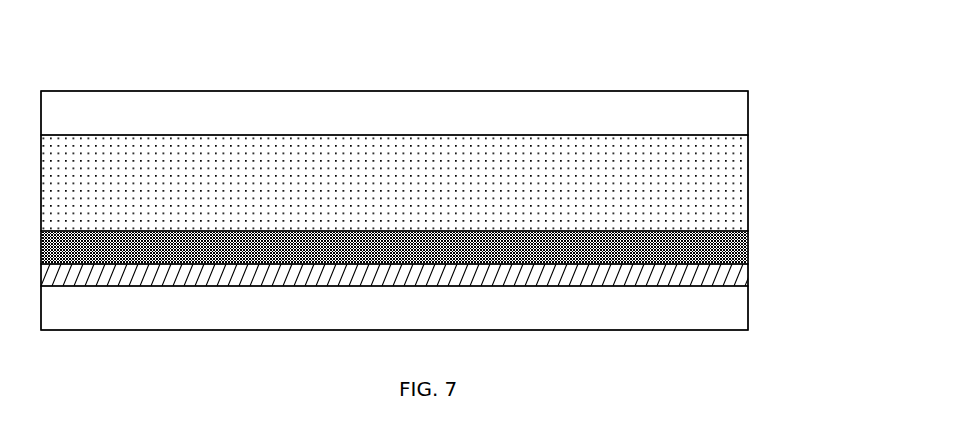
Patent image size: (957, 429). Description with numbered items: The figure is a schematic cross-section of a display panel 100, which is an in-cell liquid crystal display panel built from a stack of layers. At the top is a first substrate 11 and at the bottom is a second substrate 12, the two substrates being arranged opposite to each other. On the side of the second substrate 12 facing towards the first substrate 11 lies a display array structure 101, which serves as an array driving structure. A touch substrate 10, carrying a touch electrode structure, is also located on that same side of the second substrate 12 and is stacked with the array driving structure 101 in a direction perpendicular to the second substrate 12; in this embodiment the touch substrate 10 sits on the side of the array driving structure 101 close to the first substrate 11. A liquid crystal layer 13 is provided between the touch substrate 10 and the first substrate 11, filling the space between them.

The display panel 100 is at (82, 41).
The first substrate 11 is at (730, 112).
The liquid crystal layer 13 is at (730, 178).
The touch substrate 10 is at (728, 248).
The display array structure 101 is at (740, 278).
The second substrate 12 is at (730, 308).